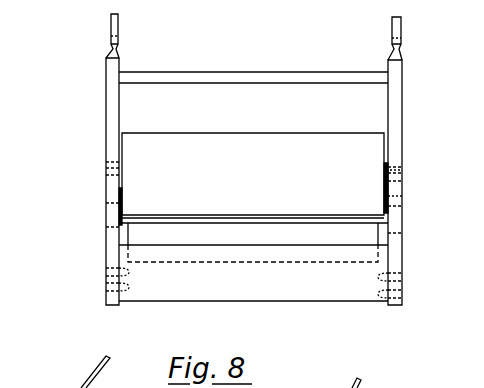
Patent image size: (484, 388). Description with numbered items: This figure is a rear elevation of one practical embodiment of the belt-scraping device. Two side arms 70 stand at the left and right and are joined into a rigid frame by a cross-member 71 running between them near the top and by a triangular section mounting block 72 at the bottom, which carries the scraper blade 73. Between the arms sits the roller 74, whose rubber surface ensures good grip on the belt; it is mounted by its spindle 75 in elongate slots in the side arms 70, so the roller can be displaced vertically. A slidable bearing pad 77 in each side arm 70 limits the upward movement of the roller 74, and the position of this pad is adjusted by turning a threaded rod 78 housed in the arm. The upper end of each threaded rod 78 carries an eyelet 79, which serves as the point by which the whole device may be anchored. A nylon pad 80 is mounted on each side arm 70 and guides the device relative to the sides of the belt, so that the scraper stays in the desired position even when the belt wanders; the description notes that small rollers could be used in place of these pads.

The side arm 70 is at (108, 98).
The cross-member 71 is at (207, 72).
The mounting block 72 is at (146, 302).
The scraper blade 73 is at (310, 238).
The roller 74 is at (137, 150).
The spindle 75 is at (413, 193).
The slidable bearing pad 77 is at (402, 170).
The threaded rod 78 is at (111, 51).
The eyelet 79 is at (112, 34).
The nylon pad 80 is at (117, 222).